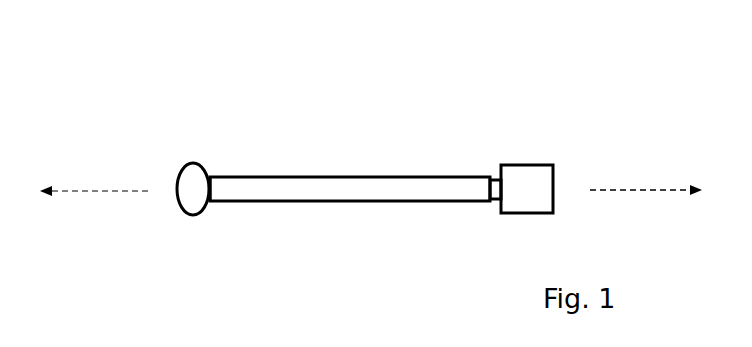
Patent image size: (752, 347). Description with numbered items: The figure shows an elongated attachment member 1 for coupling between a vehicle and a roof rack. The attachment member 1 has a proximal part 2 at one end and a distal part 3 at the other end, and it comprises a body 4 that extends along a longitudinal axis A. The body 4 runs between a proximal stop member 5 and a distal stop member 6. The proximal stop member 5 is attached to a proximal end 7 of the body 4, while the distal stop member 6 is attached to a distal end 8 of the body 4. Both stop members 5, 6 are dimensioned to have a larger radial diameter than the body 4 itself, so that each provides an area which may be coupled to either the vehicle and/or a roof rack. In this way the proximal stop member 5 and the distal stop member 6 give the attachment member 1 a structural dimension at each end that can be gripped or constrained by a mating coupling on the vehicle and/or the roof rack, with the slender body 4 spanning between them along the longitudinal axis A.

The attachment member 1 is at (386, 113).
The proximal part 2 is at (168, 141).
The distal part 3 is at (549, 121).
The body 4 is at (353, 197).
The proximal stop member 5 is at (195, 205).
The distal stop member 6 is at (537, 205).
The proximal end 7 is at (218, 178).
The distal end 8 is at (485, 183).
The longitudinal axis A is at (637, 189).